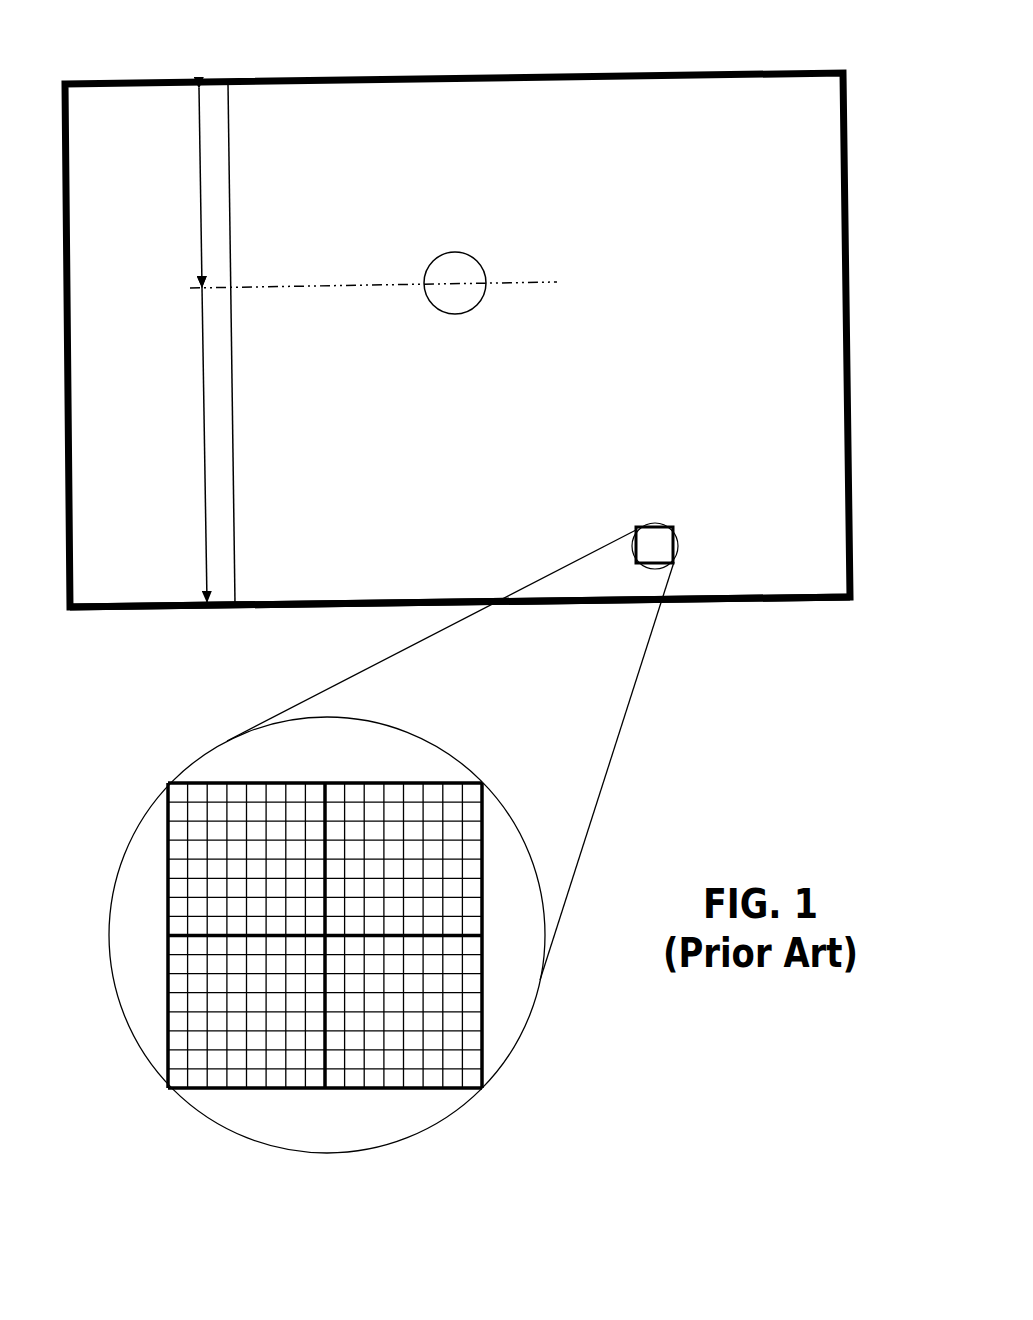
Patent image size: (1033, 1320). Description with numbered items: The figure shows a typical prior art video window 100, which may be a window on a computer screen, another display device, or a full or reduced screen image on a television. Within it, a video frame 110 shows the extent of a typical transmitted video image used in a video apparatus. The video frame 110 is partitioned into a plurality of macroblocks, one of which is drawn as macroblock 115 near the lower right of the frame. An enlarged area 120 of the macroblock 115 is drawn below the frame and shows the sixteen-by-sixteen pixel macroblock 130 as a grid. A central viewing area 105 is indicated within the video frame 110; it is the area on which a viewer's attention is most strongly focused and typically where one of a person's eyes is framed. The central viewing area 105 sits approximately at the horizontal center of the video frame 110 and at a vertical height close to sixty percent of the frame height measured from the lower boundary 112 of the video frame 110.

The video window 100 is at (776, 697).
The central viewing area 105 is at (457, 247).
The video frame 110 is at (380, 72).
The lower boundary 112 is at (326, 611).
The macroblock 115 is at (642, 521).
The enlarged area 120 is at (208, 748).
The 16×16 pixel macroblock 130 is at (509, 991).